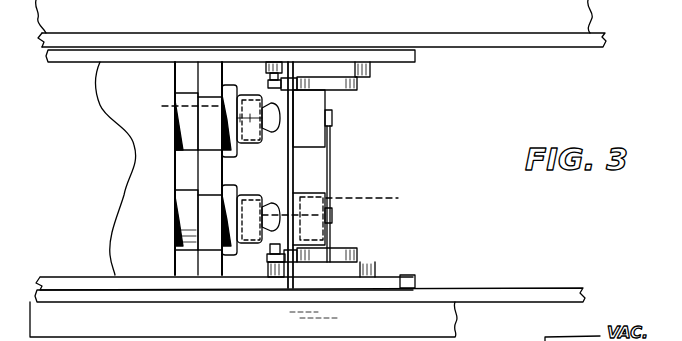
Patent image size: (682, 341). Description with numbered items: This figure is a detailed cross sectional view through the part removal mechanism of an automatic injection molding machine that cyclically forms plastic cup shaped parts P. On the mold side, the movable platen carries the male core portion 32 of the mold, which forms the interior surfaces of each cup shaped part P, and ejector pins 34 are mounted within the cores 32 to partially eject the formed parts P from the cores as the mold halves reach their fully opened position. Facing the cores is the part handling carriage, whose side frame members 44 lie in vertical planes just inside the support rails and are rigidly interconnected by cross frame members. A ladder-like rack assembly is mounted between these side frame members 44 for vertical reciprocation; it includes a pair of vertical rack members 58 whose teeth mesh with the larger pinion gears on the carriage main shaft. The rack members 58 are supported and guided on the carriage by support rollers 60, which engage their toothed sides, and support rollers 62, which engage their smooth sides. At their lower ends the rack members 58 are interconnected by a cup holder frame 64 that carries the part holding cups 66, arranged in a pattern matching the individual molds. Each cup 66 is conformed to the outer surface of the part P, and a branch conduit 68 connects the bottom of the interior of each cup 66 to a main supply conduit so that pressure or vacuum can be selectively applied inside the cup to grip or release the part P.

The core portion 32 is at (248, 140).
The ejector pins 34 is at (270, 104).
The side frame members 44 is at (402, 276).
The vertical rack members 58 is at (294, 82).
The support rollers 60 is at (357, 86).
The support rollers 62 is at (269, 78).
The cup holder frame 64 is at (287, 171).
The part holding cups 66 is at (312, 104).
The branch conduits 68 is at (331, 151).
The cup shaped part P is at (370, 199).